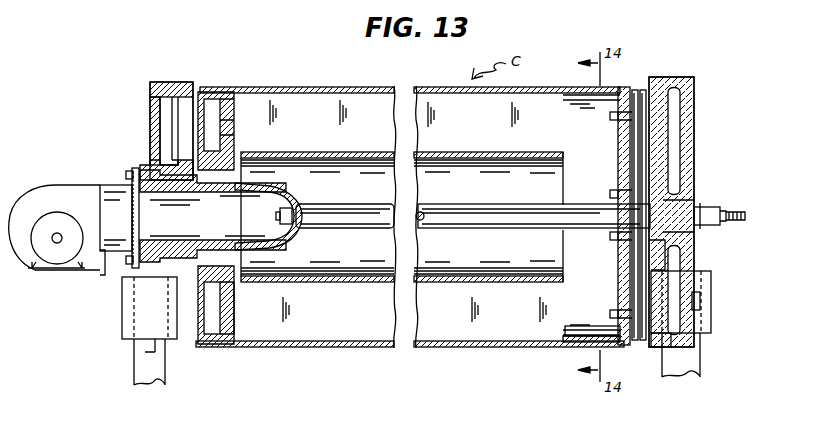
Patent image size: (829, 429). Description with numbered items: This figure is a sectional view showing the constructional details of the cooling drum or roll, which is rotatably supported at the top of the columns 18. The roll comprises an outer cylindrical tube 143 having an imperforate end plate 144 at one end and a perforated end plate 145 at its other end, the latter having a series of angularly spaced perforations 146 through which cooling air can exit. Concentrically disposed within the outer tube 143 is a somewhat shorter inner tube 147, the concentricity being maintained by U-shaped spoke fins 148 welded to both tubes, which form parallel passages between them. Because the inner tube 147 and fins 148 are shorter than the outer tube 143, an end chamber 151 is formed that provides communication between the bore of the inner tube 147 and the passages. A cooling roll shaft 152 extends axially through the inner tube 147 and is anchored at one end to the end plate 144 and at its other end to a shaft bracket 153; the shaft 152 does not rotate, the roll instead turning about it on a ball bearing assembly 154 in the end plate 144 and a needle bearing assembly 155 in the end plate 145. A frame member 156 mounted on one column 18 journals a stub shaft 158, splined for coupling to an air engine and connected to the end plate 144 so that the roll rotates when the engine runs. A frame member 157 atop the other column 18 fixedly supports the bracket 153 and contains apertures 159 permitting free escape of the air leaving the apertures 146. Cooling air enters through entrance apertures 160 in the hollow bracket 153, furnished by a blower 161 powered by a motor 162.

The column 18 is at (142, 372).
The outer cylindrical tube 143 is at (316, 92).
The imperforate end plate 144 is at (618, 296).
The perforated end plate 145 is at (225, 324).
The perforation 146 is at (225, 126).
The inner tube 147 is at (432, 280).
The spoke fin 148 is at (548, 135).
The end chamber 151 is at (575, 318).
The cooling roll shaft 152 is at (473, 218).
The shaft bracket 153 is at (200, 190).
The ball bearing assembly 154 is at (618, 241).
The needle bearing assembly 155 is at (237, 244).
The frame member 156 is at (688, 242).
The frame member 157 is at (170, 152).
The stub shaft 158 is at (683, 216).
The aperture 159 is at (170, 119).
The entrance aperture 160 is at (268, 197).
The blower 161 is at (70, 208).
The motor 162 is at (55, 262).